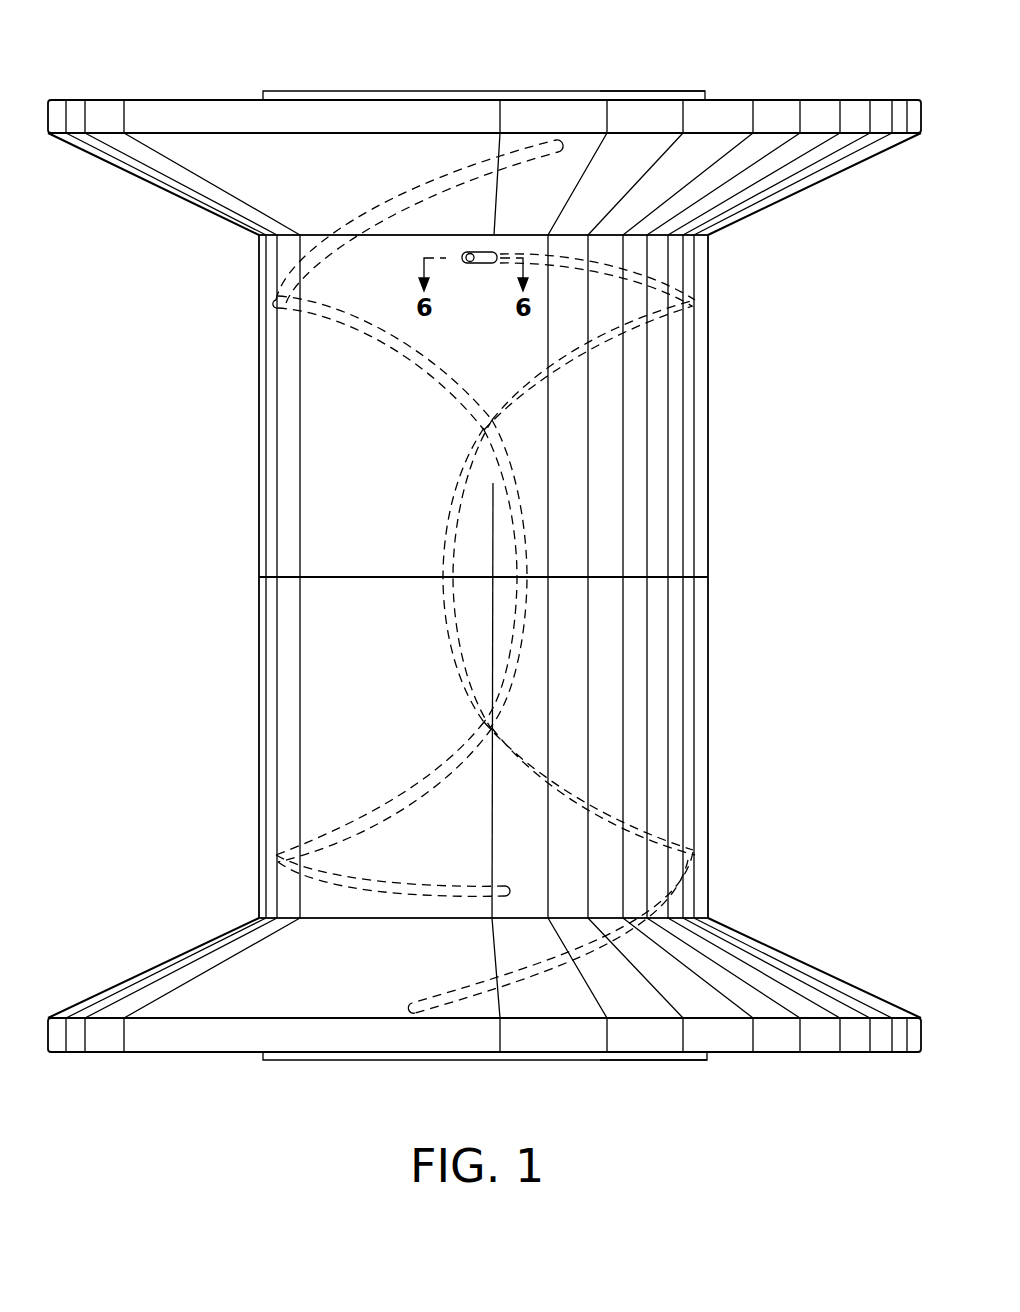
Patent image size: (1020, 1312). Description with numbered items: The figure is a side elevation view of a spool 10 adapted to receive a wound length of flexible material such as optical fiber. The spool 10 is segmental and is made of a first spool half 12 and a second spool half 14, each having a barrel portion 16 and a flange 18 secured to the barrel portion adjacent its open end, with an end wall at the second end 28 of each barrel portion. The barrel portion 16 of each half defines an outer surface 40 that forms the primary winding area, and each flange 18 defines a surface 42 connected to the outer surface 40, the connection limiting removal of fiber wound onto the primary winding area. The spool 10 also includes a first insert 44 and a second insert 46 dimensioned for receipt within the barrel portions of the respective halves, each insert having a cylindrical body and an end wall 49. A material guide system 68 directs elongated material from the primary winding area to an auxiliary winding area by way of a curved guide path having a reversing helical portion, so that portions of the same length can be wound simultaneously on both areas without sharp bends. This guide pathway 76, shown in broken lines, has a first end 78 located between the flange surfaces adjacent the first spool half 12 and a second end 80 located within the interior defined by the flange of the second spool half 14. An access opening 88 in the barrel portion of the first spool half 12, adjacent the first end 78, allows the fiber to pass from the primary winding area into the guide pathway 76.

The spool 10 is at (762, 468).
The first spool half 12 is at (258, 272).
The second spool half 14 is at (258, 832).
The barrel portion 16 is at (290, 352).
The flange 18 is at (776, 116).
The second end 28 is at (673, 576).
The outer surface 40 is at (712, 412).
The flange surface 42 is at (790, 195).
The first insert 44 is at (328, 92).
The second insert 46 is at (336, 1060).
The end wall 49 is at (651, 92).
The material guide system 68 is at (525, 815).
The guide pathway 76 is at (460, 472).
The first end 78 is at (498, 265).
The second end 80 is at (412, 1005).
The access opening 88 is at (464, 266).